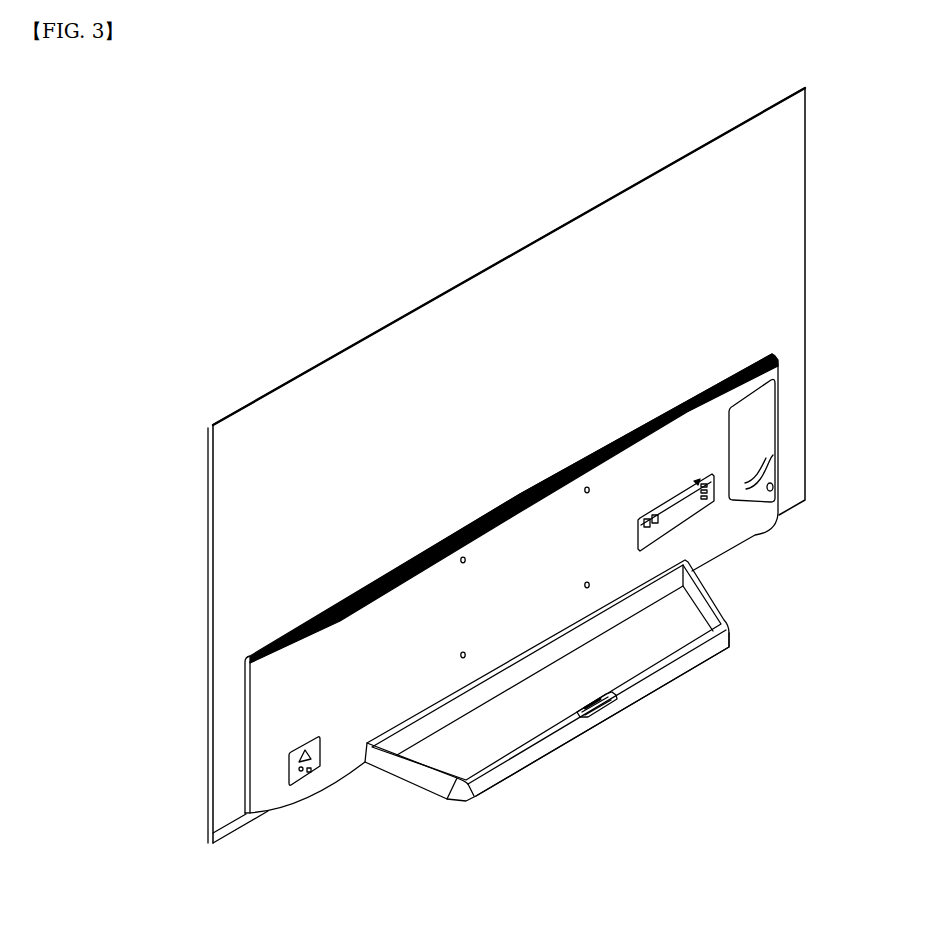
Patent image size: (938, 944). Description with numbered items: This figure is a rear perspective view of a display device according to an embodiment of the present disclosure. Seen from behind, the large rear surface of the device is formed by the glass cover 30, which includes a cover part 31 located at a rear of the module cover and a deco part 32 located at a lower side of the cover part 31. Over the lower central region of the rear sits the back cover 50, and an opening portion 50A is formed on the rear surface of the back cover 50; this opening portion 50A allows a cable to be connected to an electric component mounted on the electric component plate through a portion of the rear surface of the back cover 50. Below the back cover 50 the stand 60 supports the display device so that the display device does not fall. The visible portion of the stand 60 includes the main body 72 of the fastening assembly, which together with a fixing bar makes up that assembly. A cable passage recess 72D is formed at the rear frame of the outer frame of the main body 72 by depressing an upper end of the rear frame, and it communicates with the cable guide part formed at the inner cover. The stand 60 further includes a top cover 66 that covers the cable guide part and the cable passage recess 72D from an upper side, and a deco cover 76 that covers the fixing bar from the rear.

The glass cover 30 is at (445, 468).
The cover part 31 is at (218, 803).
The deco part 32 is at (212, 838).
The back cover 50 is at (729, 437).
The opening portion 50A is at (688, 526).
The stand 60 is at (559, 730).
The top cover 66 is at (672, 637).
The main body 72 is at (598, 713).
The cable passage recess 72D is at (596, 708).
The deco cover 76 is at (417, 727).